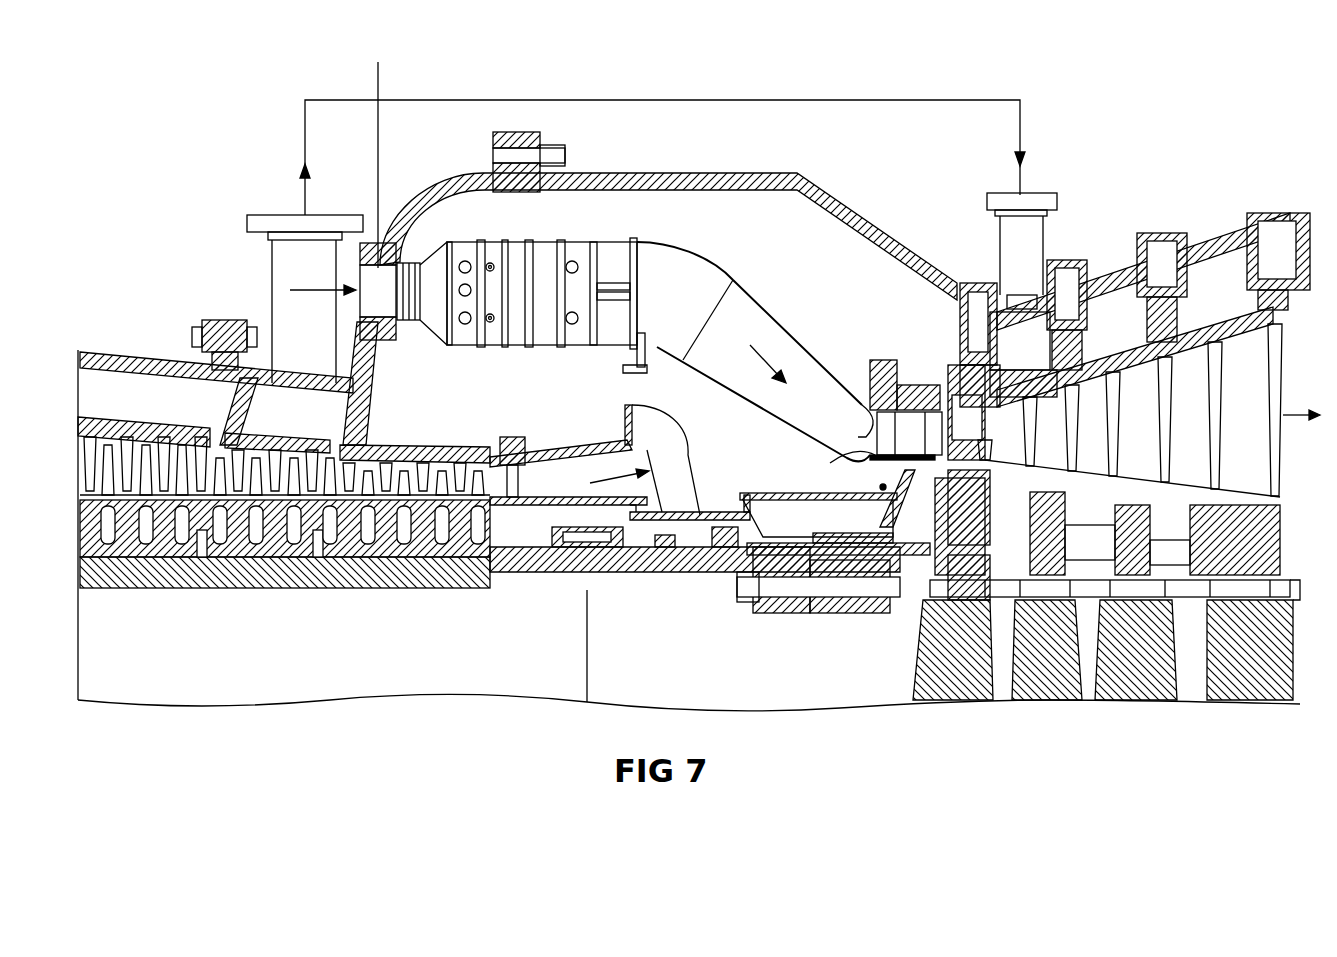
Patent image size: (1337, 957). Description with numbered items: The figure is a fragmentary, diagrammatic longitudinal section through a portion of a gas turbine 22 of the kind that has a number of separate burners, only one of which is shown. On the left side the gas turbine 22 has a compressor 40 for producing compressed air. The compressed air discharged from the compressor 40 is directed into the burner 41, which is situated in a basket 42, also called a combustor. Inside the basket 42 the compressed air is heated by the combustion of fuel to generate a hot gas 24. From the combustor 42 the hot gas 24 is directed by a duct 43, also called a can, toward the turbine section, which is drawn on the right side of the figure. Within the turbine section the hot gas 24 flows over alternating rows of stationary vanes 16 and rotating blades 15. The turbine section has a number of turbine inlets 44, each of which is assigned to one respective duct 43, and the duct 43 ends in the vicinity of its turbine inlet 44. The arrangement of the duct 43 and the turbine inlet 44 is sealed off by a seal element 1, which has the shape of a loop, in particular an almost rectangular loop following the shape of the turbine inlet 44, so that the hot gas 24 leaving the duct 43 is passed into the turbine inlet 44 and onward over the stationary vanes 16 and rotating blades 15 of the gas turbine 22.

The seal element 1 is at (857, 417).
The rotating blades 15 is at (1253, 382).
The stationary vanes 16 is at (910, 433).
The gas turbine 22 is at (1105, 237).
The hot gas 24 is at (785, 365).
The compressor 40 is at (403, 448).
The burner 41 is at (434, 325).
The basket 42 is at (493, 347).
The duct 43 is at (718, 392).
The turbine inlet 44 is at (857, 430).